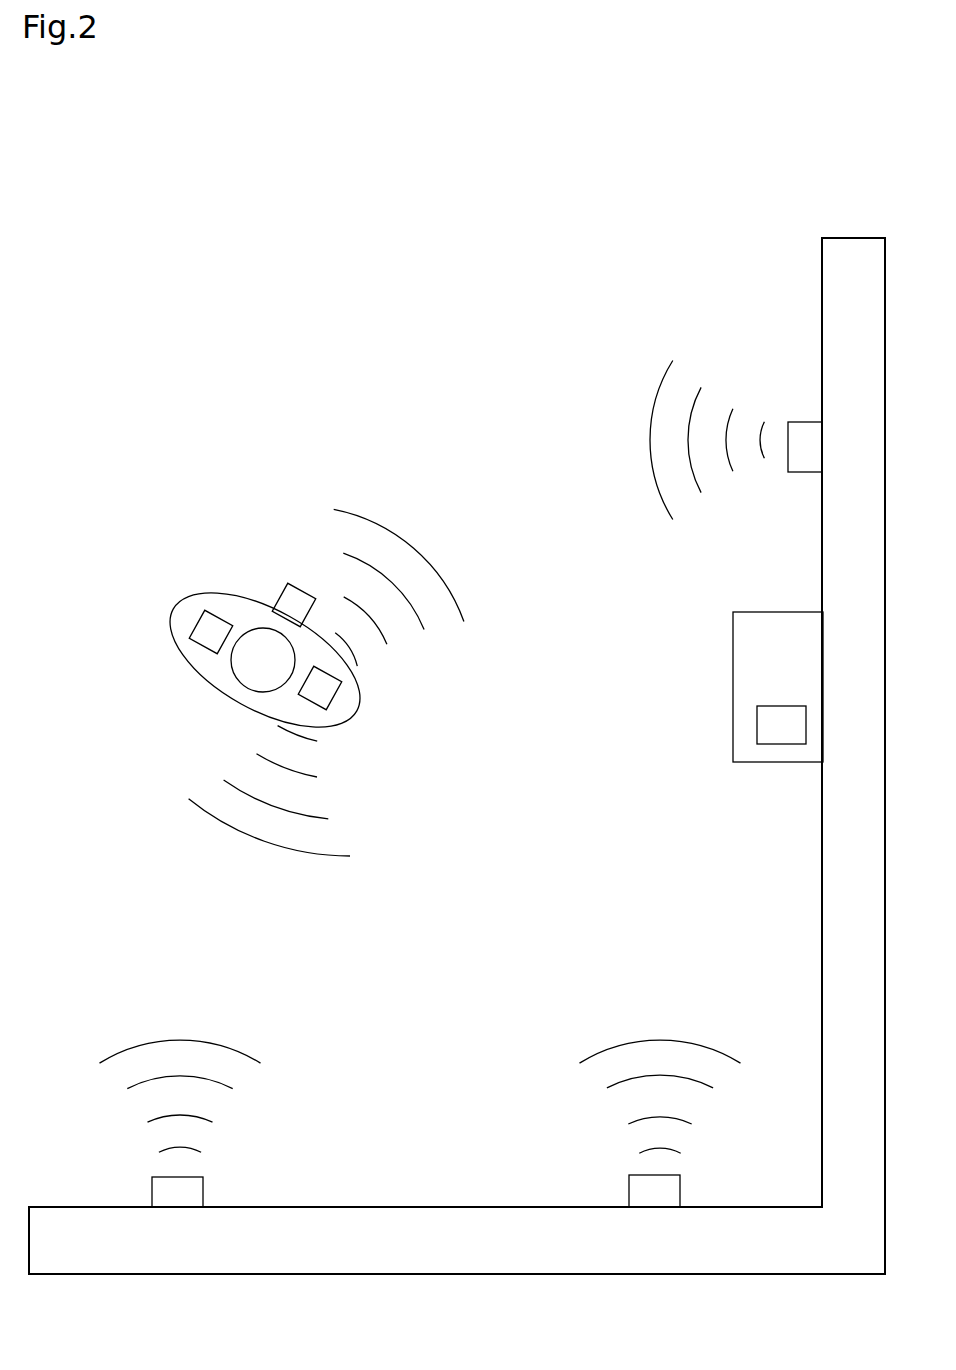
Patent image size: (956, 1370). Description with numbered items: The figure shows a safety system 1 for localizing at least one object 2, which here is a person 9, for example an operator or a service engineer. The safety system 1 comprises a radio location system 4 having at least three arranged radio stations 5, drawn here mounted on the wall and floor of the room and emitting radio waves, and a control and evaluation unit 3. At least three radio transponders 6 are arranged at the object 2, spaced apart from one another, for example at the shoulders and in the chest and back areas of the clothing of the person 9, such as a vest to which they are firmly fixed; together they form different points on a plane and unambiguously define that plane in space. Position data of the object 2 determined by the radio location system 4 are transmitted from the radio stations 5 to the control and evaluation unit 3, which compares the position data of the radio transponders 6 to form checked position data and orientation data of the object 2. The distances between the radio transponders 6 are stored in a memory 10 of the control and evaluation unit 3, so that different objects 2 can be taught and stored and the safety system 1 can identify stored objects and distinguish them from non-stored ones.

The safety system 1 is at (187, 232).
The object 2 is at (184, 601).
The control and evaluation unit 3 is at (757, 762).
The radio location system 4 is at (538, 445).
The radio station 5 is at (805, 460).
The radio transponder 6 is at (275, 605).
The person 9 is at (217, 677).
The memory 10 is at (793, 744).